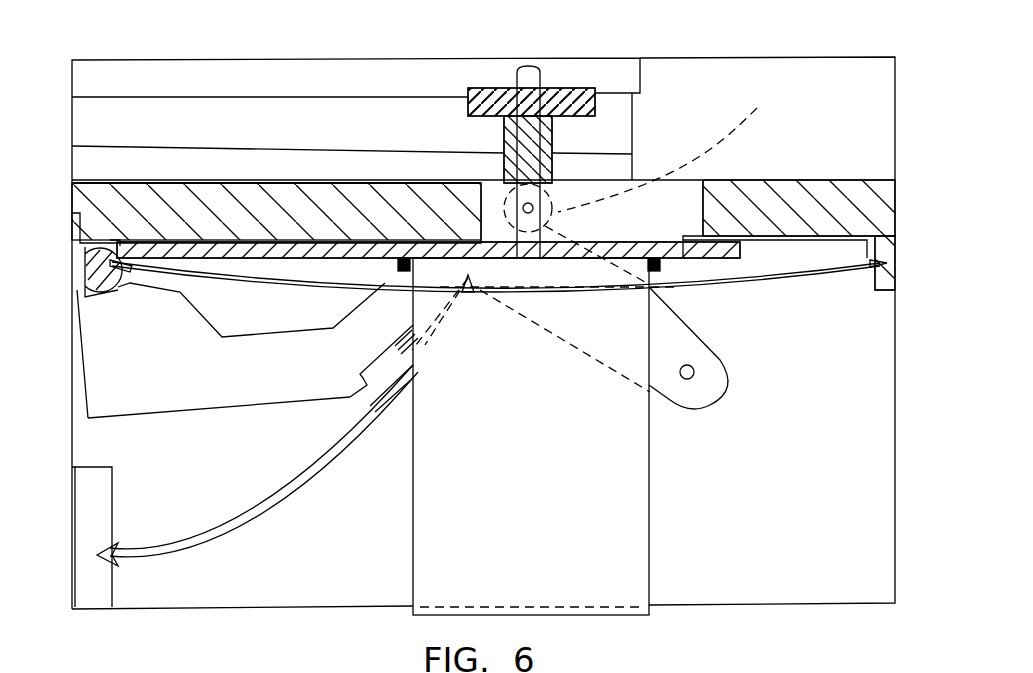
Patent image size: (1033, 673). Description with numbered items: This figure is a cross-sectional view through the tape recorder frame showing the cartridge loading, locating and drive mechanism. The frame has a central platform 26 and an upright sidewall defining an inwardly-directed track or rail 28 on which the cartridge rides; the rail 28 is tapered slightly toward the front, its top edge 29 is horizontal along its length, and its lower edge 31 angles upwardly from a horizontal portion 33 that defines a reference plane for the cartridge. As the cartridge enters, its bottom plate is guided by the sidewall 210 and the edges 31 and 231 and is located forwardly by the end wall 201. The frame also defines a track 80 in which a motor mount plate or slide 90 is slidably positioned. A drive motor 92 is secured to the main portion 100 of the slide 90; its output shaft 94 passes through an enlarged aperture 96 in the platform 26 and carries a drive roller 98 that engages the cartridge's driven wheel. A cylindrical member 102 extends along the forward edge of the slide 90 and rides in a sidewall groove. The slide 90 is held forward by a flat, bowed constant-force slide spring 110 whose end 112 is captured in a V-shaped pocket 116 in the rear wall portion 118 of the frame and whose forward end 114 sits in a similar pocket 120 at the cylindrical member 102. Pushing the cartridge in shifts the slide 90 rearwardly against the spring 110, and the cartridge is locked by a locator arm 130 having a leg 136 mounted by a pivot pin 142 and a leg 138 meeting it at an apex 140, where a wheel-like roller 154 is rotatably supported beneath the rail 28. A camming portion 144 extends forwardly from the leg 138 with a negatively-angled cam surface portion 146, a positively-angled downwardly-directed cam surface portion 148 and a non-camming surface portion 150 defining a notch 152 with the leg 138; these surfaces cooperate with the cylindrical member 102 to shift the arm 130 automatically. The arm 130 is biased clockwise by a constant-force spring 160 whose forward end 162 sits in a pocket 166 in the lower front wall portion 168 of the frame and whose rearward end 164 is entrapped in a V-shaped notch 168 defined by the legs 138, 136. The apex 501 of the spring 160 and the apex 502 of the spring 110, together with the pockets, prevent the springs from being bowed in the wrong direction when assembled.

The central platform 26 is at (195, 195).
The track or rail 28 is at (278, 105).
The top edge 29 is at (394, 100).
The lower edge 31 is at (105, 143).
The horizontal portion 33 is at (582, 90).
The track 80 is at (790, 246).
The motor mount plate or slide 90 is at (292, 300).
The drive motor 92 is at (634, 466).
The output shaft 94 is at (551, 190).
The enlarged aperture 96 is at (683, 196).
The drive roller or drive member 98 is at (588, 88).
The main portion 100 is at (632, 254).
The cylindrical member 102 is at (97, 253).
The slide spring 110 is at (747, 292).
The spring end 112 is at (887, 244).
The forward end 114 is at (110, 240).
The notch or pocket 116 is at (860, 292).
The rear wall portion 118 is at (894, 212).
The notch or pocket 120 is at (85, 276).
The locator arm 130 is at (283, 388).
The leg 136 is at (668, 318).
The leg 138 is at (374, 318).
The apex 140 is at (684, 147).
The pivot pin 142 is at (694, 378).
The camming portion 144 is at (145, 410).
The negatively-angled cam surface portion 146 is at (116, 285).
The positively-angled cam surface portion 148 is at (198, 248).
The non-camming surface portion 150 is at (208, 310).
The notch 152 is at (340, 252).
The roller 154 is at (555, 177).
The constant-force spring 160 is at (316, 488).
The forward end 162 is at (112, 548).
The rearward end 164 is at (469, 292).
The notch or pocket 166 is at (112, 566).
The lower front wall portion 168 is at (474, 292).
The end wall 201 is at (677, 170).
The sidewall 210 is at (380, 162).
The edge 231 is at (108, 182).
The apex 501 is at (360, 396).
The apex 502 is at (658, 270).